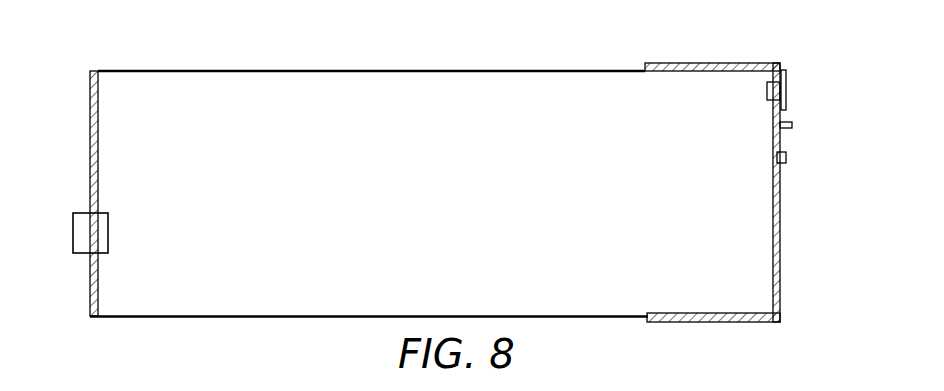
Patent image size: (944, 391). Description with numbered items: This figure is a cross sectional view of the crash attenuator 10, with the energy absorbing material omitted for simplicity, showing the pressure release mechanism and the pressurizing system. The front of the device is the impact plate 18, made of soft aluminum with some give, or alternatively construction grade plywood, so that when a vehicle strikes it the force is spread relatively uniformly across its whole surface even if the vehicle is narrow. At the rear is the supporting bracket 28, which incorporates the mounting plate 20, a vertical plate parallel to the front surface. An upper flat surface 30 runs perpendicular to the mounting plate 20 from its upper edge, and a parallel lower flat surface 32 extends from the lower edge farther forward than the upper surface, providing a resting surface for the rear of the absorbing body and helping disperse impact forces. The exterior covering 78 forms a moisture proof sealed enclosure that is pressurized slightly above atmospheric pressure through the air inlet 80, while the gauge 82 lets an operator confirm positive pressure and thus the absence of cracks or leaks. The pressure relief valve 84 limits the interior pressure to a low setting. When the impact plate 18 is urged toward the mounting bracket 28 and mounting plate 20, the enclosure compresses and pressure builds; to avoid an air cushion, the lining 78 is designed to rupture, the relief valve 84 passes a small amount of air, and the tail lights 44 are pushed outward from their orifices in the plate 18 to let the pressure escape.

The crash attenuator 10 is at (115, 42).
The impact plate 18 is at (90, 130).
The mounting plate 20 is at (781, 246).
The supporting bracket 28 is at (793, 312).
The upper flat surface 30 is at (727, 64).
The lower flat surface 32 is at (730, 322).
The tail lights 44 is at (73, 232).
The exterior covering 78 is at (276, 317).
The air inlet 80 is at (792, 125).
The gauge 82 is at (785, 80).
The pressure relief valve 84 is at (786, 158).